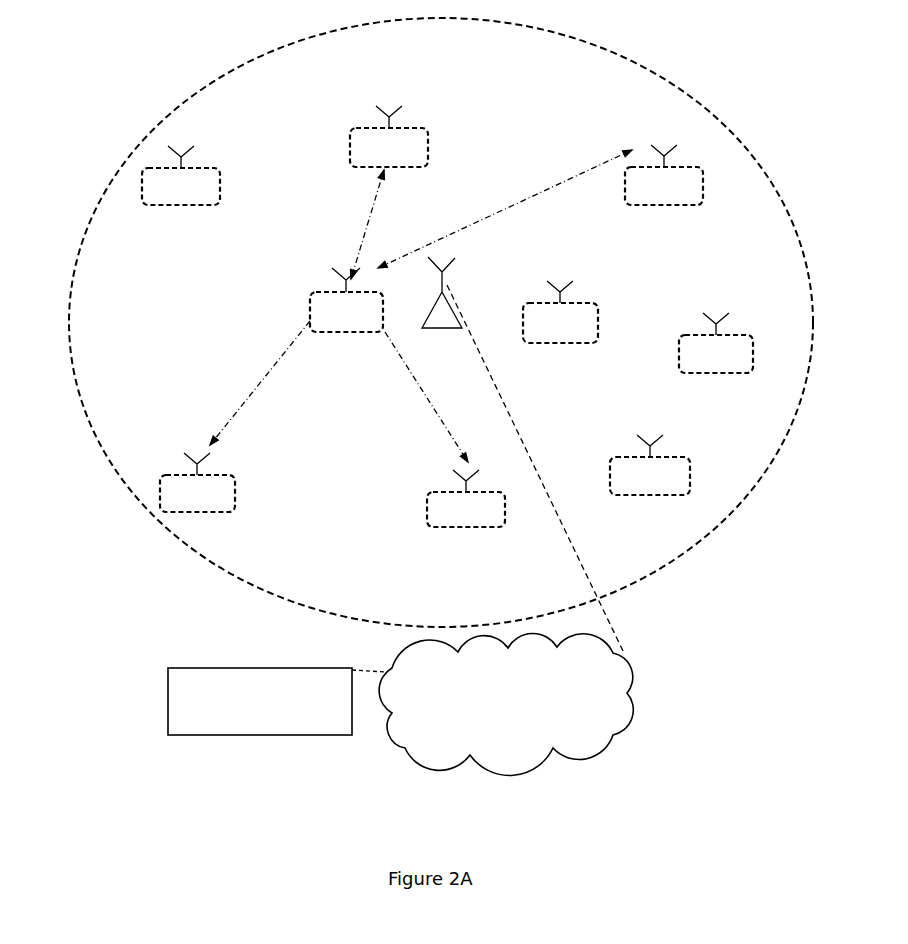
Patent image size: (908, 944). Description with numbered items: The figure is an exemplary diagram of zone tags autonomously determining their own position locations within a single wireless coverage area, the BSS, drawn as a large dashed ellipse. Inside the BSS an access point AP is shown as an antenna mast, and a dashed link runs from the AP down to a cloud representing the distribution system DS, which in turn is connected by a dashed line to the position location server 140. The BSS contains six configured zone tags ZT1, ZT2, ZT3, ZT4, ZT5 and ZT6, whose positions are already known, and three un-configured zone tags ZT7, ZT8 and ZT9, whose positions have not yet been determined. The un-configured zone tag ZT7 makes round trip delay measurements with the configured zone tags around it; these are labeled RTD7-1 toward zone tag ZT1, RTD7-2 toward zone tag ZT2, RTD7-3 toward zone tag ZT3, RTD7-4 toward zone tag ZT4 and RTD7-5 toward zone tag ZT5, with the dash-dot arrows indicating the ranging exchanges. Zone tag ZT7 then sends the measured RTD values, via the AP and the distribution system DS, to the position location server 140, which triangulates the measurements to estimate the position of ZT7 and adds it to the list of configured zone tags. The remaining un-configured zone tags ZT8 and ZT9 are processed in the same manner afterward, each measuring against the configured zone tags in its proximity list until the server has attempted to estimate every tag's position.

The position location server 140 is at (268, 736).
The access point AP is at (452, 282).
The basic service set BSS is at (246, 63).
The zone tag ZT1 is at (181, 175).
The zone tag ZT2 is at (197, 482).
The zone tag ZT3 is at (389, 136).
The zone tag ZT4 is at (466, 498).
The zone tag ZT5 is at (664, 175).
The zone tag ZT6 is at (650, 465).
The zone tag ZT7 is at (346, 300).
The zone tag ZT8 is at (560, 312).
The zone tag ZT9 is at (716, 343).
The round trip delay measurement RTD7-1 is at (252, 227).
The round trip delay measurement RTD7-2 is at (258, 383).
The round trip delay measurement RTD7-3 is at (354, 224).
The round trip delay measurement RTD7-4 is at (435, 397).
The round trip delay measurement RTD7-5 is at (505, 209).
The distribution system DS is at (506, 704).